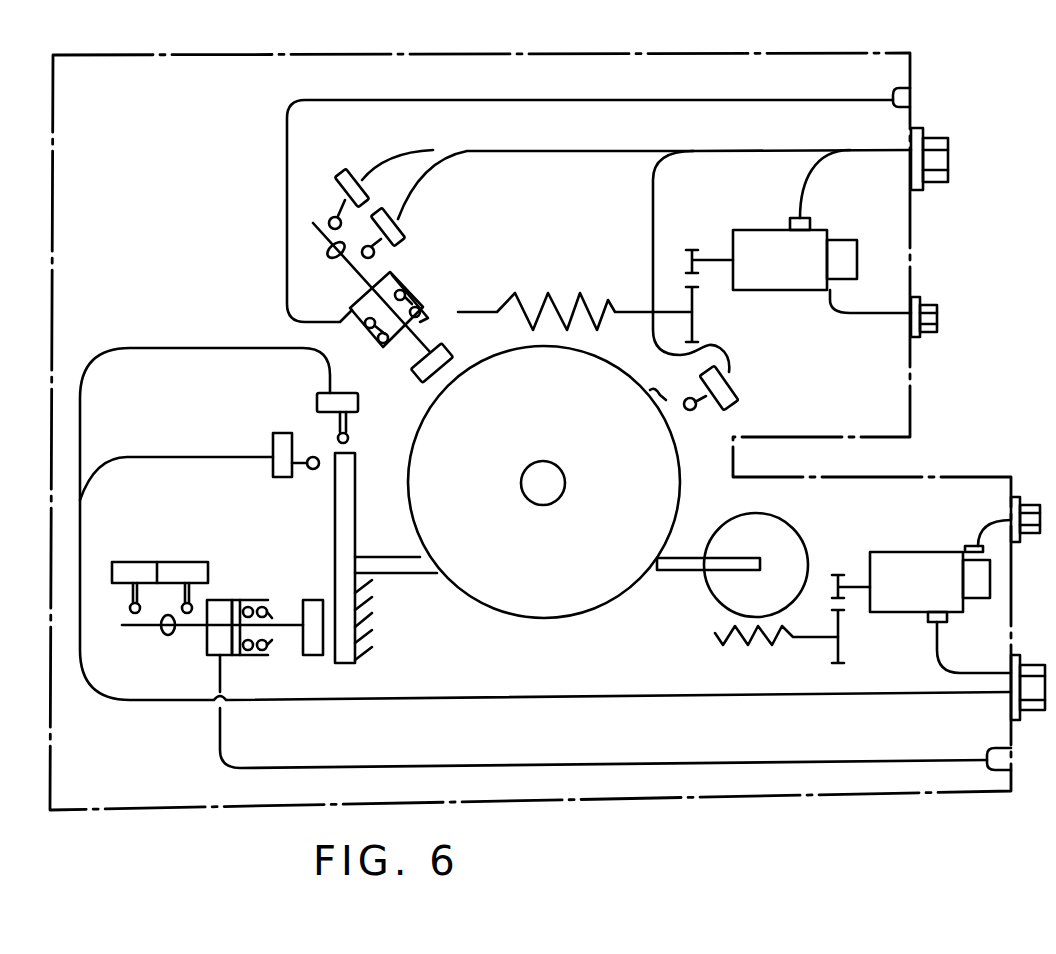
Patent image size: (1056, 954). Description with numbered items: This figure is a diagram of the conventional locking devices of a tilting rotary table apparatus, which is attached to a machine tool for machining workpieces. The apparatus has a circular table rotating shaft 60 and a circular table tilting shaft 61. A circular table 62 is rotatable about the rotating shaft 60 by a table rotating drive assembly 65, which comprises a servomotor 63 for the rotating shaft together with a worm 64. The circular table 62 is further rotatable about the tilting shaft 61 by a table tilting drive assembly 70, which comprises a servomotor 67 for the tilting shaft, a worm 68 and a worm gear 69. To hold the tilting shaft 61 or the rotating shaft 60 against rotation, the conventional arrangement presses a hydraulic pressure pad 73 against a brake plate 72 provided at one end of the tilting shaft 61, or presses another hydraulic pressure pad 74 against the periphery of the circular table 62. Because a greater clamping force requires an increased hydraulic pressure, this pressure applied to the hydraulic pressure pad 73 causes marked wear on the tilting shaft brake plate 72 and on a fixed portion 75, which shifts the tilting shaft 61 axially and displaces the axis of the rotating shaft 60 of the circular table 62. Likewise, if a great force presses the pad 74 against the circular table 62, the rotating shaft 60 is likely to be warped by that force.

The circular table rotating shaft 60 is at (543, 505).
The circular table tilting shaft 61 is at (680, 572).
The circular table 62 is at (660, 453).
The servomotor for the rotating shaft 63 is at (773, 250).
The worm 64 is at (585, 300).
The table rotating drive assembly 65 is at (647, 197).
The servomotor for the tilting shaft 67 is at (915, 585).
The worm 68 is at (770, 645).
The worm gear 69 is at (785, 552).
The table tilting drive assembly 70 is at (823, 673).
The brake plate 72 is at (342, 520).
The hydraulic pressure pad 73 is at (303, 653).
The hydraulic pressure pad 74 is at (445, 350).
The fixed portion 75 is at (368, 632).